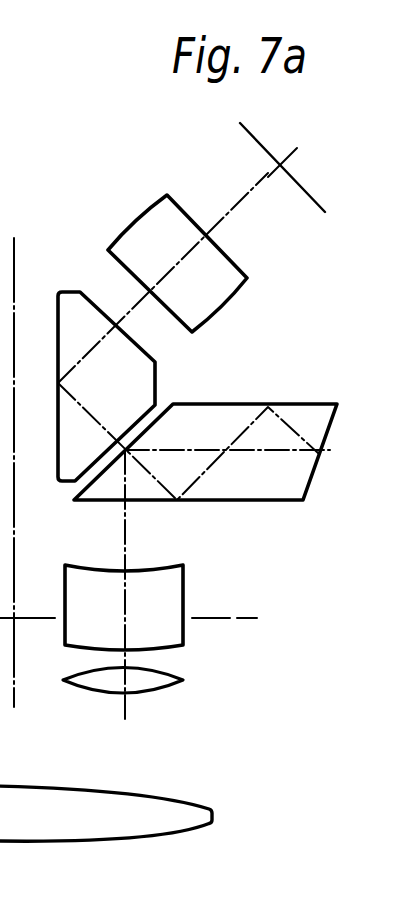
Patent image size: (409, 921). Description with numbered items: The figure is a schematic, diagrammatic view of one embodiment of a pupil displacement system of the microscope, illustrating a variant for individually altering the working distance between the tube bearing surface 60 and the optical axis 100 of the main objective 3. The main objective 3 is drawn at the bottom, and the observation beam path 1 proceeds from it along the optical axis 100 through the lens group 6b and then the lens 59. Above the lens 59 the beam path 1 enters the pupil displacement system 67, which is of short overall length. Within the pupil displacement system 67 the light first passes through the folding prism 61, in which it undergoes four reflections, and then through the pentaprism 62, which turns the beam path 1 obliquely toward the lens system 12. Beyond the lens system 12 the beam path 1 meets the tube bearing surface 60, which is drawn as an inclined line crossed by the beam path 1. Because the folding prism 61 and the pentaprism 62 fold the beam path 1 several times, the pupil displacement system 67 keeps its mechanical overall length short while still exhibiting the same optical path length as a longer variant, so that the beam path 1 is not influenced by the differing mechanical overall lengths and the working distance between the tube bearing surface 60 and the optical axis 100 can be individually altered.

The optical axis 100 is at (14, 247).
The observation beam path 1 is at (128, 717).
The main objective 3 is at (173, 822).
The lens group 6b is at (160, 682).
The lens system 12 is at (223, 285).
The lens 59 is at (167, 588).
The tube bearing surface 60 is at (295, 177).
The folding prism 61 is at (297, 482).
The pentaprism 62 is at (137, 382).
The pupil displacement system 67 is at (318, 548).